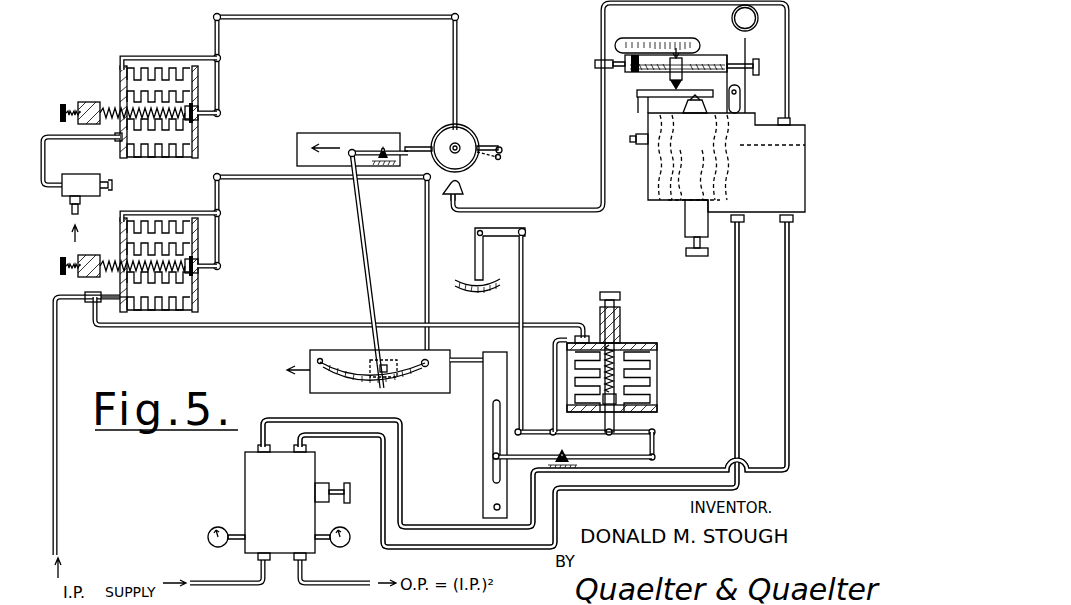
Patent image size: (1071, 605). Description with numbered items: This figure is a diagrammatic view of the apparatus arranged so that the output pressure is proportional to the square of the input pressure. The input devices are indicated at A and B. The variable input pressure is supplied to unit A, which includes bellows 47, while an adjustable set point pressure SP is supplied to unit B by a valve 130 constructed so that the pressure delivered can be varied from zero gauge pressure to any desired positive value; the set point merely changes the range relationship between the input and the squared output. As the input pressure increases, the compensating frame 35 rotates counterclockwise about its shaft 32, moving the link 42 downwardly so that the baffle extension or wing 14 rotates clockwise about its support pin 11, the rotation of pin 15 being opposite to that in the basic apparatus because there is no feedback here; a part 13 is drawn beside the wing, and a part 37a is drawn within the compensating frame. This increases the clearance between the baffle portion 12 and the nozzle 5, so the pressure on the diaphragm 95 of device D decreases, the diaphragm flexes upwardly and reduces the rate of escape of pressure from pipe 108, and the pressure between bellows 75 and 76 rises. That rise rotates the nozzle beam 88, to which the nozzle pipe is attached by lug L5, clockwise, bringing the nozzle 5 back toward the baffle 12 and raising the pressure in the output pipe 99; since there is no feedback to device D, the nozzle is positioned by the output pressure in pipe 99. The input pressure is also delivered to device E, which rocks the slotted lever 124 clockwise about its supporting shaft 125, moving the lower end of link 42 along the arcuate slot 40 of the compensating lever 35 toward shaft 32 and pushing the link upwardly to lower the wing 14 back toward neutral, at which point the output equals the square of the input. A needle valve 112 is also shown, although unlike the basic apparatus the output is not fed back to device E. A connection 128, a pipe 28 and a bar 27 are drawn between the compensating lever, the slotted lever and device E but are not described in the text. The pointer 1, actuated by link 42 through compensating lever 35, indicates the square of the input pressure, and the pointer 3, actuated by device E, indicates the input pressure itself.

The input device B is at (93, 80).
The set point pressure SP is at (81, 161).
The valve 130 is at (94, 194).
The input device A is at (246, 290).
The bellows 47 is at (180, 306).
The pointer 1 is at (310, 140).
The pin 15 is at (398, 168).
The baffle extension or wing 14 is at (420, 147).
The baffle portion 12 is at (470, 130).
The rod 13' 13 is at (486, 150).
The support pin 11 is at (503, 150).
The nozzle 5 is at (466, 185).
The link 42 is at (368, 255).
The pointer 3 is at (478, 255).
The compensating frame 35 is at (420, 393).
The arcuate slot 40 is at (388, 385).
The arcuate rack 37a' 37a is at (358, 355).
The shaft 32 is at (430, 358).
The pipe 128' 128 is at (460, 358).
The slotted lever 124 is at (483, 438).
The supporting shaft 125 is at (494, 507).
The lever bar 27''' 27 is at (640, 425).
The pipe 28'' 28 is at (557, 435).
The device E is at (692, 387).
The needle valve 112 is at (350, 495).
The nozzle beam 88 is at (688, 32).
The lug L5 is at (597, 65).
The device D is at (776, 175).
The diaphragm 95 is at (790, 145).
The bellows 75 is at (730, 185).
The bellows 76 is at (680, 208).
The pipe 99 is at (738, 345).
The pipe 108 is at (786, 255).